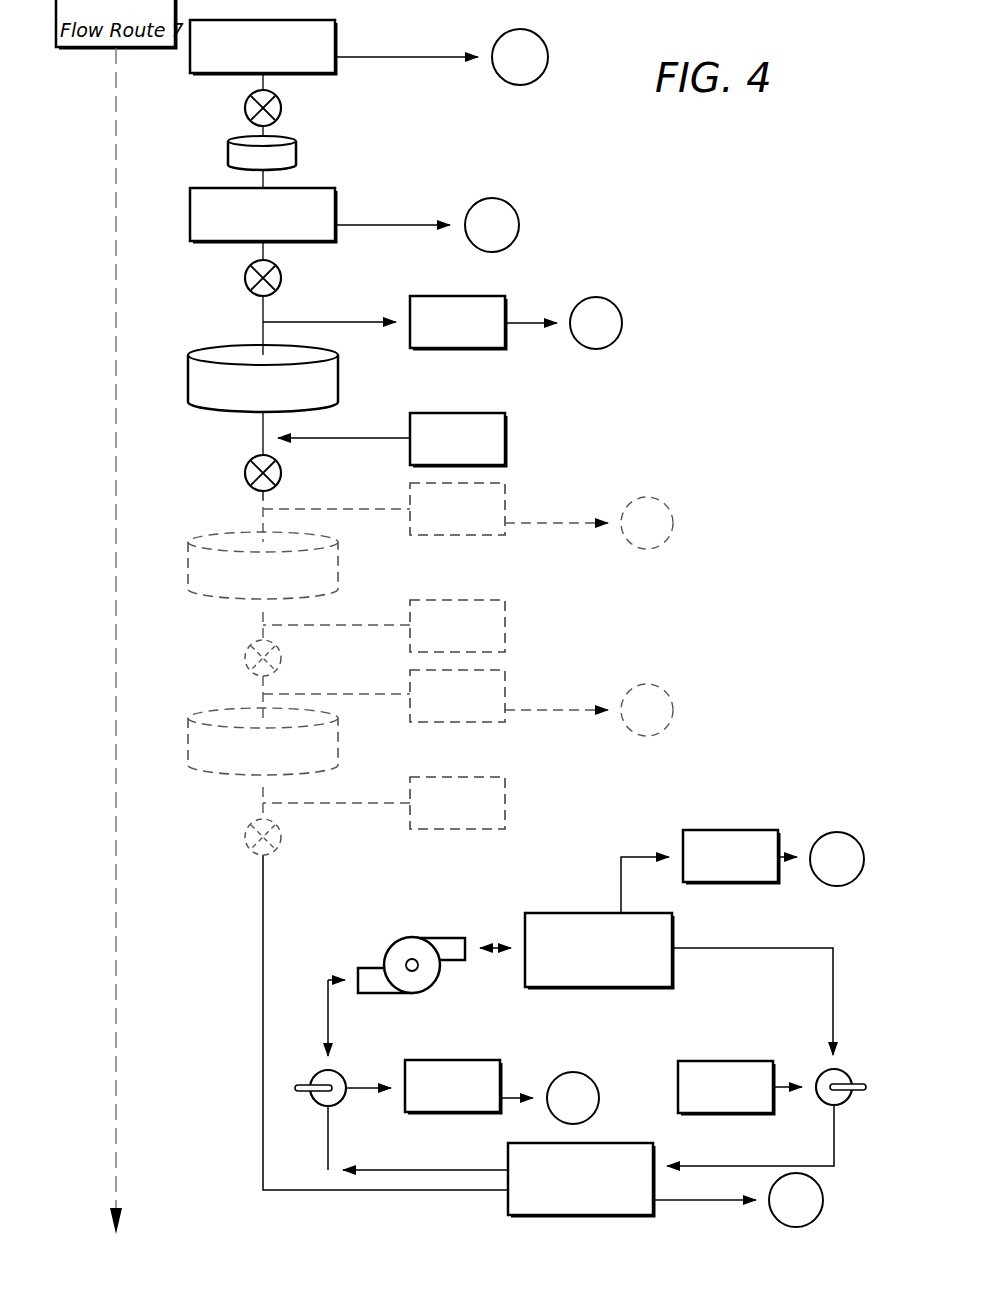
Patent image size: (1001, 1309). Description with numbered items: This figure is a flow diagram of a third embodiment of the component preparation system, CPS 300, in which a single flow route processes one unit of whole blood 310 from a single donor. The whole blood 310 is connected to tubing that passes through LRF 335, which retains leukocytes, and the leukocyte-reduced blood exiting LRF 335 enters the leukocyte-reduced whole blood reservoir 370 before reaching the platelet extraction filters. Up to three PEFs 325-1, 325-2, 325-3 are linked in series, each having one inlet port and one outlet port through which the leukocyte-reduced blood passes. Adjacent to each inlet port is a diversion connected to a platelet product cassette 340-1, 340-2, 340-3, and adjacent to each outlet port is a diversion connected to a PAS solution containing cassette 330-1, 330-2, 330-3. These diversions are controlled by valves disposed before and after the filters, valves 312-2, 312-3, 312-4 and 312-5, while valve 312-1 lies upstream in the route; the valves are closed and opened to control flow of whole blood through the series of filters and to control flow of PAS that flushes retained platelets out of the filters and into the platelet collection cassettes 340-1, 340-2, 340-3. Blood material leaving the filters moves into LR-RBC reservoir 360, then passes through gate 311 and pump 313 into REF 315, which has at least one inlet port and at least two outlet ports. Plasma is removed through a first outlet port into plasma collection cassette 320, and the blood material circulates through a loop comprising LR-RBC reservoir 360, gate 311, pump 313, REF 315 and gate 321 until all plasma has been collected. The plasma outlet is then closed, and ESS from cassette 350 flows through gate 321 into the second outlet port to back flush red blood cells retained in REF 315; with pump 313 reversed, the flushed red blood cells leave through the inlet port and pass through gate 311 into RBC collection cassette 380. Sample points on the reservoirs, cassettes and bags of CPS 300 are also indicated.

The component preparation system (CPS) 300 is at (680, 207).
The whole blood 310 is at (335, 35).
The valve 312-1 is at (282, 108).
The valve 312-2 is at (244, 280).
The valve 312-3 is at (250, 483).
The valve 312-4 is at (248, 668).
The valve 312-5 is at (248, 847).
The LRF 335 is at (296, 153).
The leukocyte-reduced whole blood (LR-WB) reservoir 370 is at (335, 205).
The platelet product cassette 340-1 is at (478, 296).
The platelet product cassette 340-2 is at (505, 510).
The platelet product cassette 340-3 is at (505, 697).
The PEF 325-1 is at (188, 388).
The PEF 325-2 is at (188, 577).
The PEF 325-3 is at (188, 752).
The PAS solution containing cassette 330-1 is at (505, 440).
The PAS solution containing cassette 330-2 is at (505, 628).
The PAS solution containing cassette 330-3 is at (505, 805).
The plasma collection cassette 320 is at (731, 830).
The REF 315 is at (565, 912).
The pump 313 is at (398, 940).
The RBC collection cassette 380 is at (480, 1060).
The ESS cassette 350 is at (719, 1061).
The gate 311 is at (316, 1102).
The gate 321 is at (822, 1103).
The LR-RBC reservoir 360 is at (555, 1216).